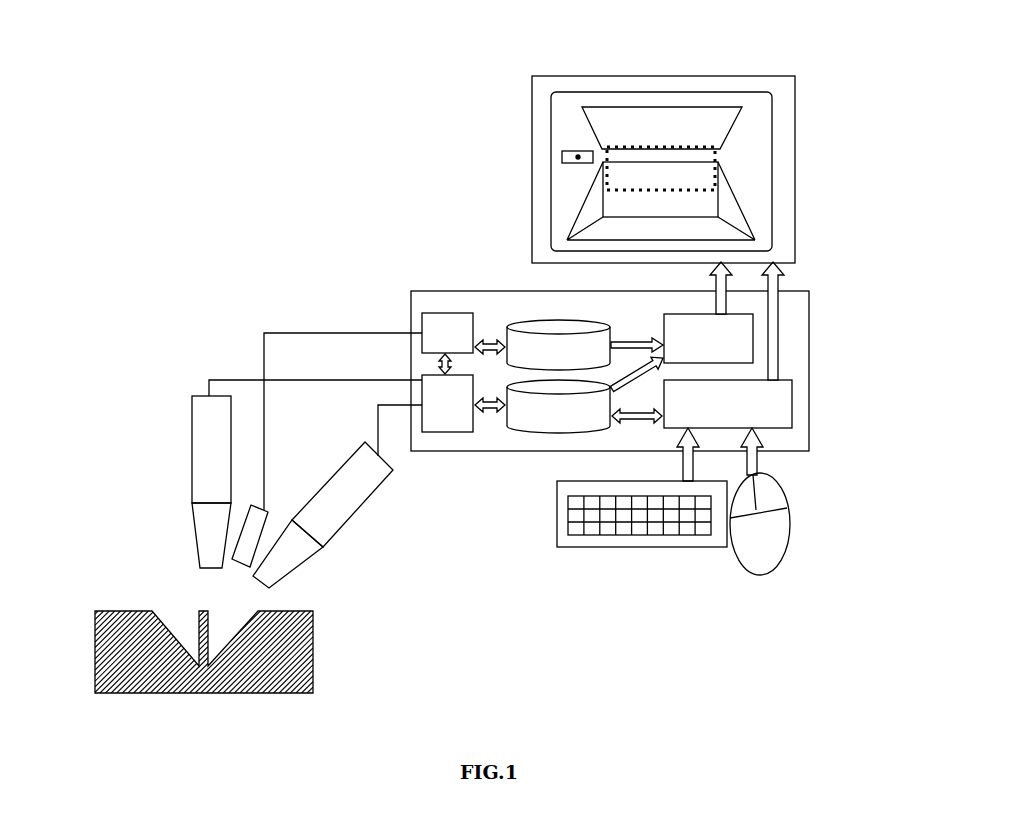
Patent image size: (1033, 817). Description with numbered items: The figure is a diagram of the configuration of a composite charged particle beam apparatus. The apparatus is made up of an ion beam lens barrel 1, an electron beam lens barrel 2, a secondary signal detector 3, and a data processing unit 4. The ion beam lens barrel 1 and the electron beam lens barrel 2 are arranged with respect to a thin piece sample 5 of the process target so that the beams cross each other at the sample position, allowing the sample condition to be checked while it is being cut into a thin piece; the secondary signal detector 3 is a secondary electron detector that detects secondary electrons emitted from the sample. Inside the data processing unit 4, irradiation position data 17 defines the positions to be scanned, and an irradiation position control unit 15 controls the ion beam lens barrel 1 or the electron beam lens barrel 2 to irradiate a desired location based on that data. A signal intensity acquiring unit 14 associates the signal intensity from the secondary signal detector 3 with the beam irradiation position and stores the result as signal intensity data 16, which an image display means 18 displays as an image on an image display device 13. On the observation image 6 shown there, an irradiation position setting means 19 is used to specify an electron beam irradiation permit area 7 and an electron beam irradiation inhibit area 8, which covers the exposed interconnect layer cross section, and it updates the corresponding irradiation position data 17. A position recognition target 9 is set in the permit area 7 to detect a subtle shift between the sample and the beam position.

The ion beam lens barrel 1 is at (198, 452).
The electron beam lens barrel 2 is at (352, 503).
The secondary signal detector 3 is at (262, 520).
The data processing unit 4 is at (457, 292).
The thin piece sample 5 is at (198, 616).
The observation image 6 is at (773, 100).
The electron beam irradiation permit area 7 is at (752, 183).
The electron beam irradiation inhibit area 8 is at (715, 155).
The position recognition target 9 is at (575, 149).
The image display device 13 is at (627, 82).
The signal intensity acquiring unit 14 is at (447, 333).
The irradiation position control unit 15 is at (447, 403).
The signal intensity data 16 is at (558, 345).
The irradiation position data 17 is at (558, 406).
The image display means 18 is at (708, 338).
The irradiation position setting means 19 is at (728, 404).